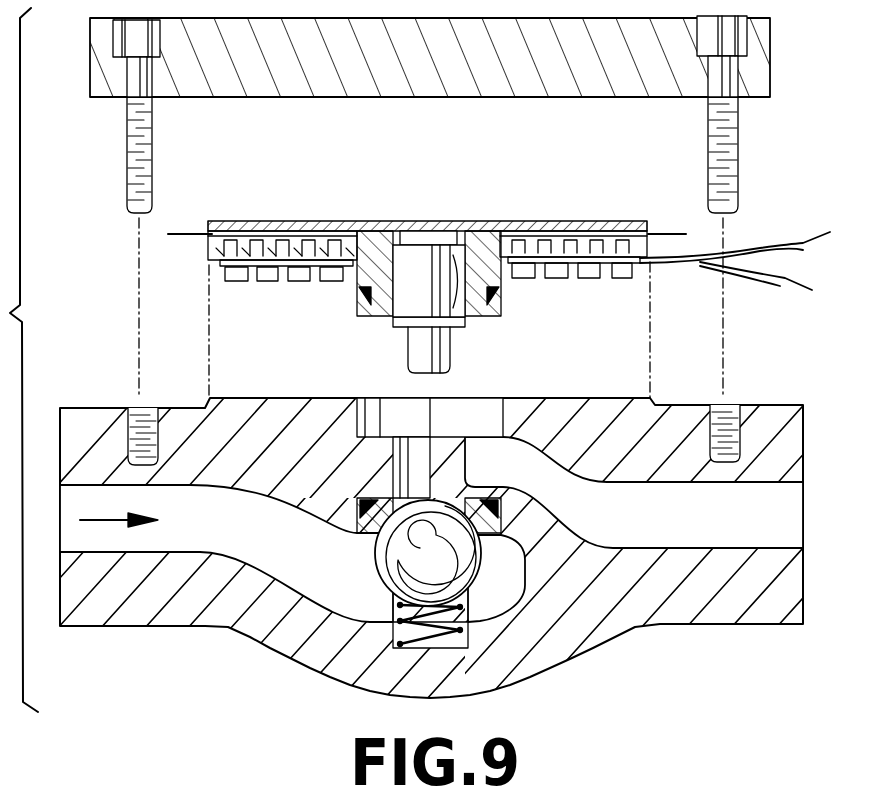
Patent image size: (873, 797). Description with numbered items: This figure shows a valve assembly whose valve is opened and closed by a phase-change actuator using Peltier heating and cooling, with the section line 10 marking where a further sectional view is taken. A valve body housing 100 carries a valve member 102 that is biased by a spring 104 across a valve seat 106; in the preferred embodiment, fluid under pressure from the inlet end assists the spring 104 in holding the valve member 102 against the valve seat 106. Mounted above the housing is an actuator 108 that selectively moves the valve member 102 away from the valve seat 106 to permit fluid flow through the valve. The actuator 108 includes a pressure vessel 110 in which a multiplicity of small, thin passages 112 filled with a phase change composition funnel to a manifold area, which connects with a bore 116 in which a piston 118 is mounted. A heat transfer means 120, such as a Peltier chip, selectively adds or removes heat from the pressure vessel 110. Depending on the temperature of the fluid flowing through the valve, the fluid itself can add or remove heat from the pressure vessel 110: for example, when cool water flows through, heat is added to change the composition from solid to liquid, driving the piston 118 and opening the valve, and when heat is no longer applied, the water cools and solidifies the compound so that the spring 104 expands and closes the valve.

The section line 10- 10 is at (181, 237).
The valve body housing 100 is at (703, 603).
The valve member 102 is at (425, 553).
The spring 104 is at (478, 606).
The valve seat 106 is at (470, 520).
The actuator 108 is at (598, 217).
The pressure vessel 110 is at (313, 221).
The thin passages 112 is at (506, 233).
The bore 116 is at (455, 312).
The piston 118 is at (406, 295).
The heat transfer means 120 is at (595, 279).